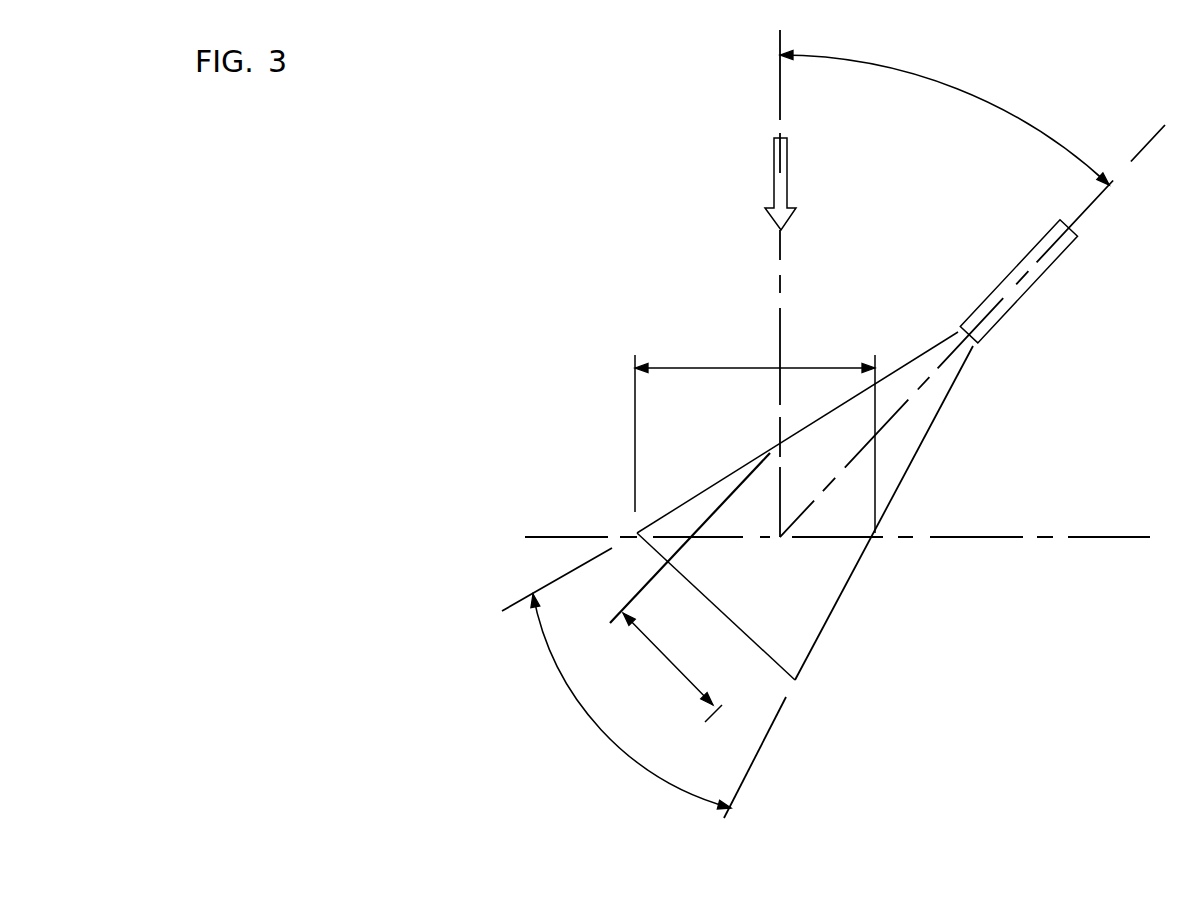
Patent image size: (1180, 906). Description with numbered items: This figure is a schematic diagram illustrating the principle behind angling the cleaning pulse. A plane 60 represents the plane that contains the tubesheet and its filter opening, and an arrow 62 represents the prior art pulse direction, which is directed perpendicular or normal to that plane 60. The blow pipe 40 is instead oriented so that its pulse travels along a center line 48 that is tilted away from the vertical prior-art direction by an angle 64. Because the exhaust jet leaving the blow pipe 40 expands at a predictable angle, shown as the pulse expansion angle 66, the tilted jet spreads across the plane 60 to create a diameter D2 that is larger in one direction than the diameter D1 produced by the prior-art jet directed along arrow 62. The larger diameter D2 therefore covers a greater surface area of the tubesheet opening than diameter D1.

The blow pipe 40 is at (1030, 287).
The center line of the direction of the pulse 48 is at (1148, 138).
The plane 60 is at (1105, 540).
The arrow 62 is at (787, 179).
The angle 64 is at (985, 100).
The angle 66 is at (595, 722).
The diameter D1 is at (670, 662).
The diameter D2 is at (722, 363).